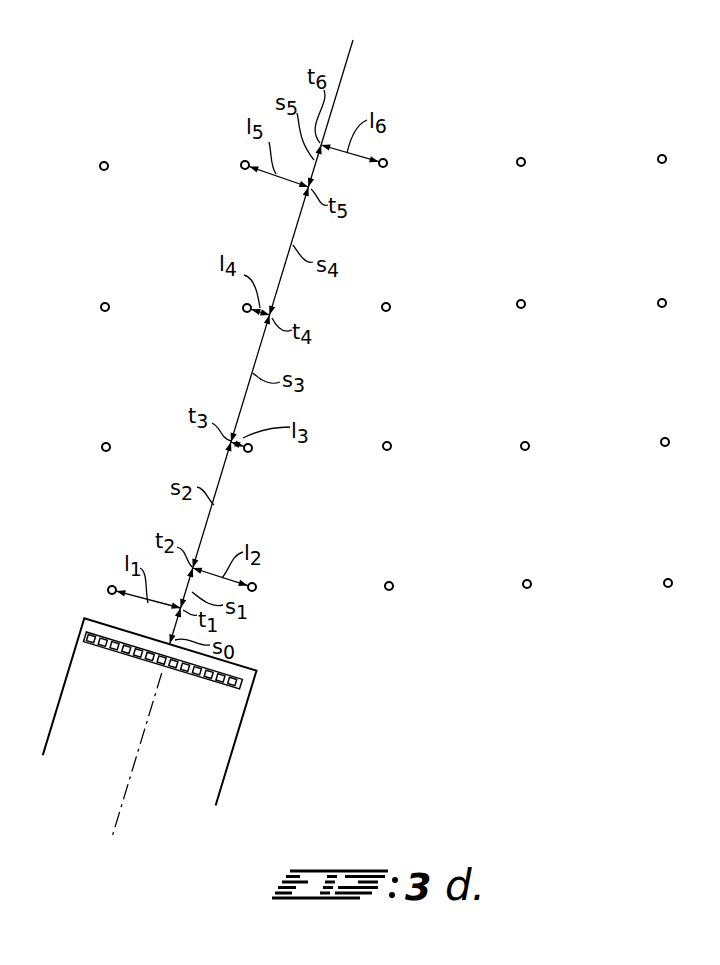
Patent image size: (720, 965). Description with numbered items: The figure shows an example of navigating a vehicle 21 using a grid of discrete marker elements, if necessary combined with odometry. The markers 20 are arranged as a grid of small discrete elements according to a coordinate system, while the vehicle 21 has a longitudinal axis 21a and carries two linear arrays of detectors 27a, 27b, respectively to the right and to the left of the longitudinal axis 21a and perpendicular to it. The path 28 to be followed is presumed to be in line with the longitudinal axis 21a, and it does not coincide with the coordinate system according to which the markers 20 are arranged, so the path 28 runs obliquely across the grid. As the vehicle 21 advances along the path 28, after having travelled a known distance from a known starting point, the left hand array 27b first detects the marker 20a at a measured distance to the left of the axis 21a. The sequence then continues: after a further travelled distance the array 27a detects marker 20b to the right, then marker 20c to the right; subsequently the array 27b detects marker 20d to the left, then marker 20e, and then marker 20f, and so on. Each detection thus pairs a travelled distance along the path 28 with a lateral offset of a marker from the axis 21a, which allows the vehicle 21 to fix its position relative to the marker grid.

The path 28 is at (345, 67).
The markers 20 is at (658, 157).
The marker 20a is at (109, 588).
The marker 20b is at (258, 589).
The marker 20c is at (252, 451).
The marker 20d is at (242, 308).
The marker 20e is at (243, 163).
The marker 20f is at (387, 165).
The vehicle 21 is at (227, 740).
The longitudinal axis 21a is at (130, 770).
The linear array of detectors 27a is at (245, 685).
The linear array of detectors 27b is at (82, 640).